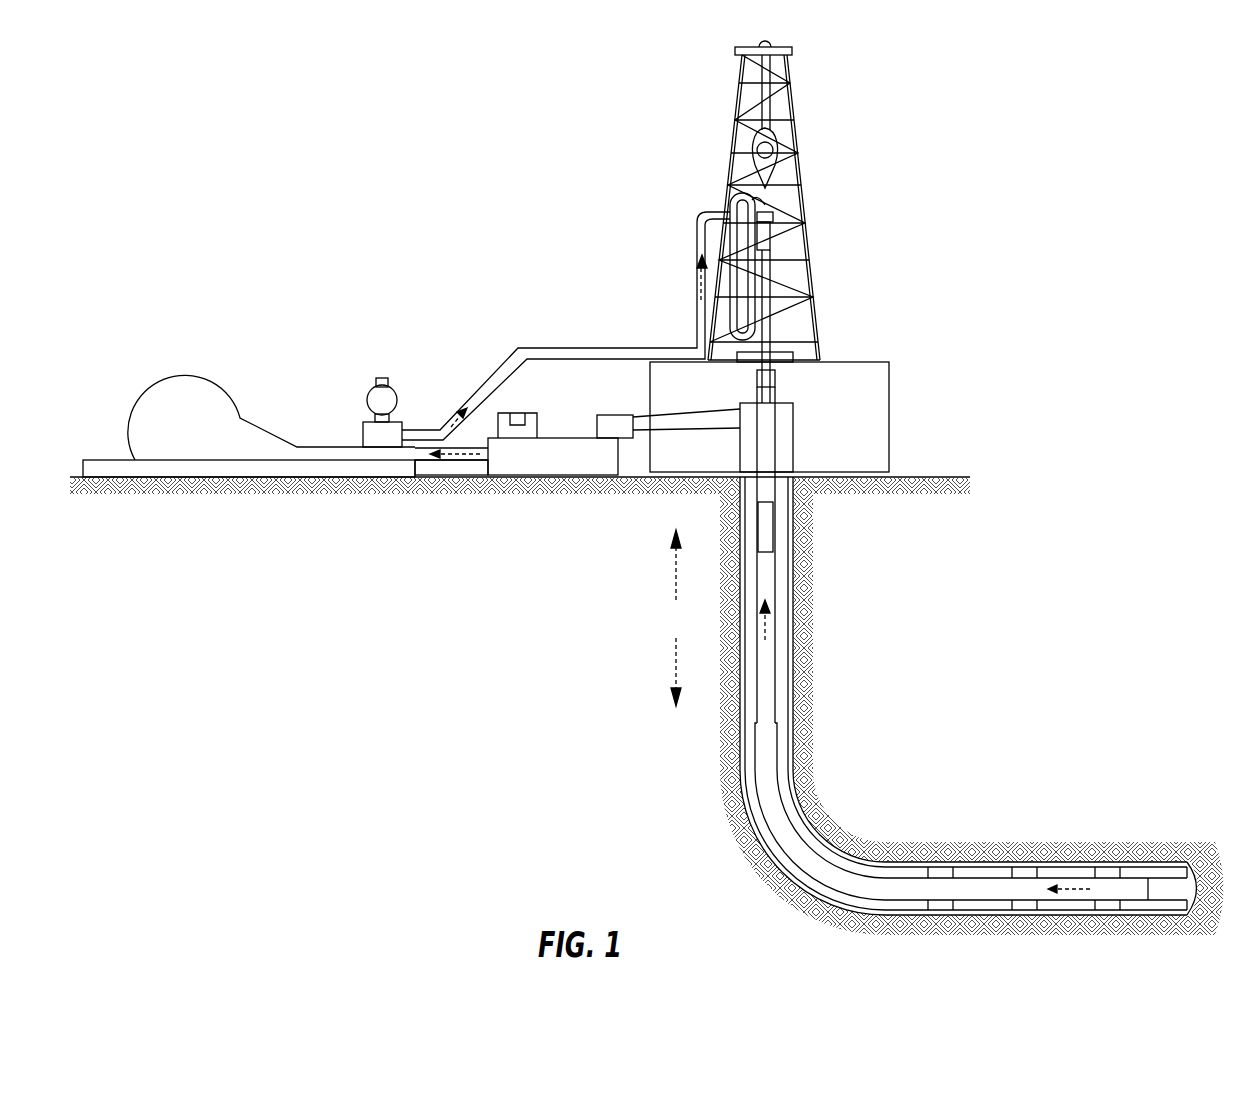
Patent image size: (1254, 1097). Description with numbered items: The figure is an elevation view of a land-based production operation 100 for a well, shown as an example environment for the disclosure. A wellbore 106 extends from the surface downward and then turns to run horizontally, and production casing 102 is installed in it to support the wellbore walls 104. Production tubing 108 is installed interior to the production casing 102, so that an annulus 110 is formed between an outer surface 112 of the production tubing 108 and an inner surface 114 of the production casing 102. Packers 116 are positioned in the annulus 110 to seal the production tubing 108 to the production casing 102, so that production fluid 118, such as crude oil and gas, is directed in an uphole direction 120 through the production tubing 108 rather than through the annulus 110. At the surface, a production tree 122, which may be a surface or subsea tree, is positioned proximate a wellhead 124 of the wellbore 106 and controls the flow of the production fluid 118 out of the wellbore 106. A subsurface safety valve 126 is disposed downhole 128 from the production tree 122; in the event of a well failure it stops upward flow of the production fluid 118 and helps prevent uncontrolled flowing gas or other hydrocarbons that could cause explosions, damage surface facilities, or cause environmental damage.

The production operation 100 is at (521, 176).
The production casing 102 is at (795, 653).
The wellbore walls 104 is at (800, 580).
The wellbore 106 is at (1181, 888).
The production tubing 108 is at (745, 712).
The annulus 110 is at (778, 698).
The outer surface 112 is at (853, 868).
The inner surface 114 is at (825, 845).
The packers 116 is at (1023, 868).
The production fluid 118 is at (1070, 887).
The uphole direction 120 is at (676, 570).
The production tree 122 is at (868, 380).
The wellhead 124 is at (802, 463).
The subsurface safety valve 126 is at (768, 532).
The downhole 128 is at (676, 660).